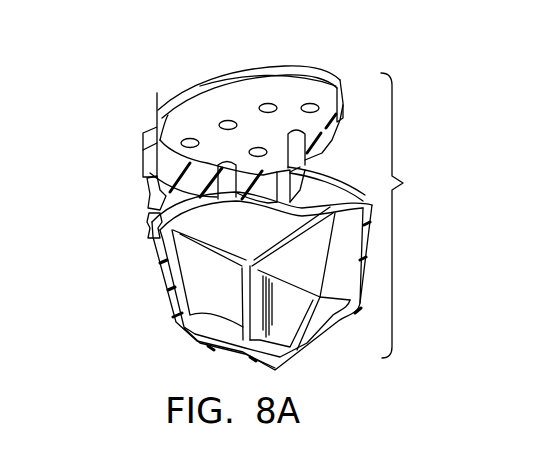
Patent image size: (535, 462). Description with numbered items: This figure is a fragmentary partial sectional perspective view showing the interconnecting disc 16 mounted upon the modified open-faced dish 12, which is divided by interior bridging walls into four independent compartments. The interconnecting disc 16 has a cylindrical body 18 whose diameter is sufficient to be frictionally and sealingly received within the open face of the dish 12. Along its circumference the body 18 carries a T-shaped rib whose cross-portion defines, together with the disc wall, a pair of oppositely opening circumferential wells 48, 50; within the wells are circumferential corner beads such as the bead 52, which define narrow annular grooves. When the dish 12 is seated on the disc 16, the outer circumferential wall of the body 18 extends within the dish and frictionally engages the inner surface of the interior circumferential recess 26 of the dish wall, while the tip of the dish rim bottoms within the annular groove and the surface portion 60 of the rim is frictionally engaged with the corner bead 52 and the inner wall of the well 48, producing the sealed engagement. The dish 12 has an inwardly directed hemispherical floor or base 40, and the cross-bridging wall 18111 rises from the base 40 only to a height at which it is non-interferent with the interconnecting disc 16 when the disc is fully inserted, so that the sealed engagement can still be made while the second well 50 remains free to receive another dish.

The open-faced dish 12 is at (161, 286).
The interconnecting disc 16 is at (224, 75).
The cylindrical body 18 is at (337, 123).
The circumferential recess 26 is at (333, 193).
The floor or base 40 is at (204, 325).
The circumferential well 48 is at (158, 112).
The circumferential well 50 is at (150, 183).
The circumferential corner bead 52 is at (318, 84).
The surface portion of rim 60 is at (152, 214).
The cross-bridging wall 18111 is at (226, 290).